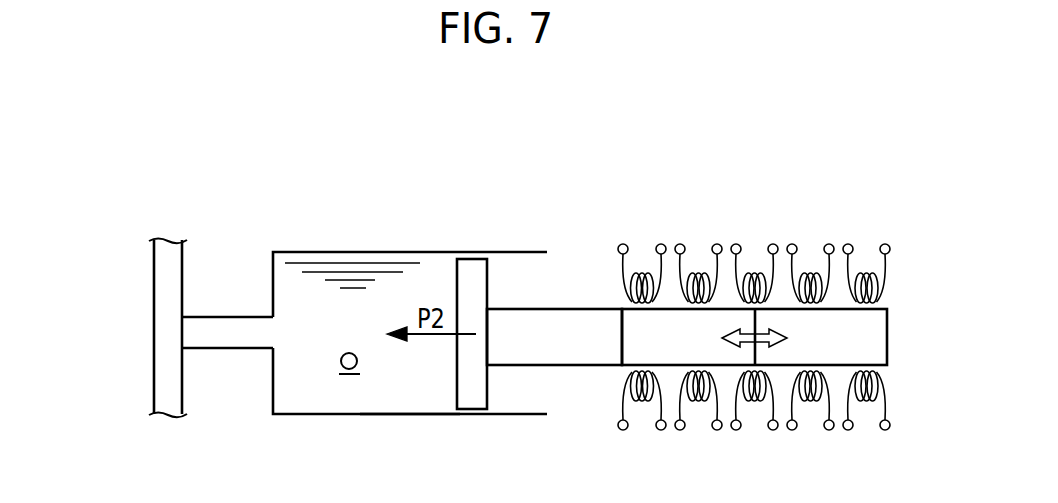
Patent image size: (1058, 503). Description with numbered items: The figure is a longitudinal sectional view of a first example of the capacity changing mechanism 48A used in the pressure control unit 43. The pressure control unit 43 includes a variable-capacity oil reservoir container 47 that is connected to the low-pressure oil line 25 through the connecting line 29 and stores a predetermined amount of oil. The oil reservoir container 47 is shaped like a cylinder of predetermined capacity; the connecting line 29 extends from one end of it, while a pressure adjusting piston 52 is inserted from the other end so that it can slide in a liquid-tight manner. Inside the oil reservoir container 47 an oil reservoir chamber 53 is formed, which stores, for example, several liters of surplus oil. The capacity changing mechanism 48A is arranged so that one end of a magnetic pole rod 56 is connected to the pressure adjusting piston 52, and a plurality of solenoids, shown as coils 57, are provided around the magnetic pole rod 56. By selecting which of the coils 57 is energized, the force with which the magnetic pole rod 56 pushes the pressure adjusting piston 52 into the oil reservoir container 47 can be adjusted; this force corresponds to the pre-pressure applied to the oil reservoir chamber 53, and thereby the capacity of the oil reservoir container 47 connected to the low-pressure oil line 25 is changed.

The pressure control unit 43 is at (274, 204).
The low-pressure oil line 25 is at (153, 272).
The connecting line 29 is at (224, 316).
The oil reservoir container 47 is at (383, 251).
The pressure adjusting piston 52 is at (472, 268).
The oil reservoir chamber 53 is at (400, 403).
The capacity changing mechanism 48A is at (672, 140).
The magnetic pole rod 56 is at (590, 308).
The coils 57 is at (672, 229).